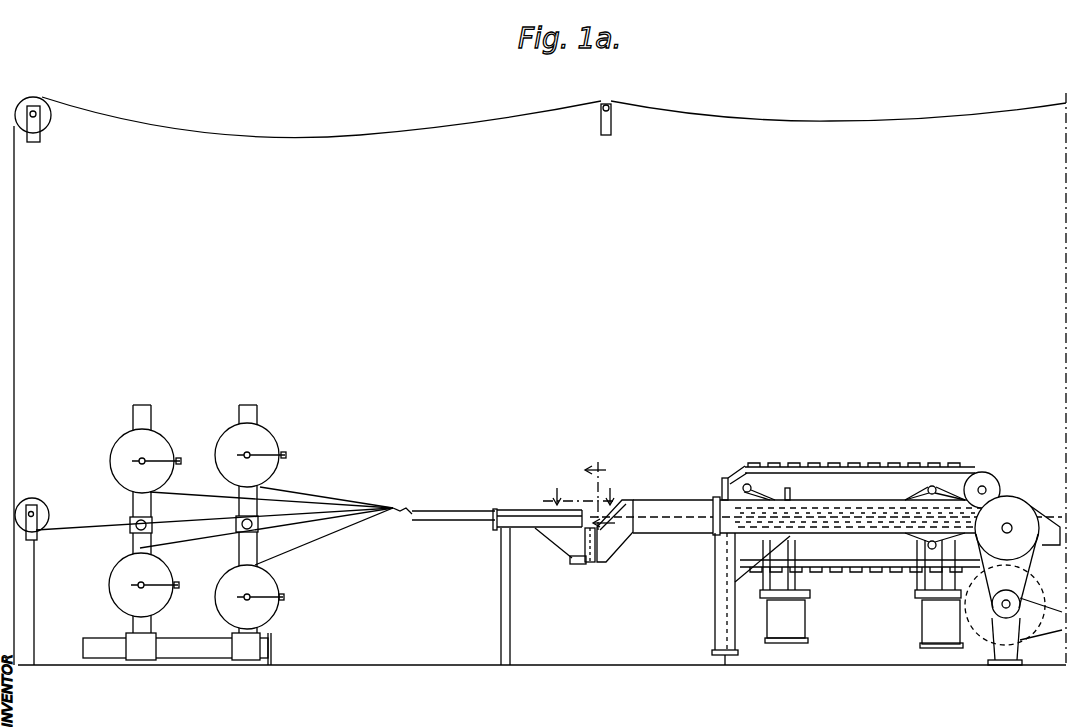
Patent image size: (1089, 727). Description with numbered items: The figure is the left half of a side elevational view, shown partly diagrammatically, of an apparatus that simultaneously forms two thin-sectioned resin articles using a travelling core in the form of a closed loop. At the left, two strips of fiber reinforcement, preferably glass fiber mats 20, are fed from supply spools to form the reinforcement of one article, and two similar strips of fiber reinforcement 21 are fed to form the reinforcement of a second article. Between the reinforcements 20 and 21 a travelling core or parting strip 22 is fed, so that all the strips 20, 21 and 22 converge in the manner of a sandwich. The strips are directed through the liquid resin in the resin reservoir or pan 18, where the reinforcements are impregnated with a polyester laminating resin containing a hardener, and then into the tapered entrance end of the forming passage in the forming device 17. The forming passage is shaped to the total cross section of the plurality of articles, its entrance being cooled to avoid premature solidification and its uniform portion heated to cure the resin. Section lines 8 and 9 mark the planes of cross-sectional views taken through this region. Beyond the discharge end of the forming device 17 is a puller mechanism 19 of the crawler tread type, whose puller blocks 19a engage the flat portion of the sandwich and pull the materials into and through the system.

The section line 8- 8 is at (584, 492).
The section line 9- 9 is at (603, 498).
The forming device 17 is at (505, 514).
The resin reservoir or pan 18 is at (451, 522).
The puller mechanism 19 is at (870, 450).
The puller blocks 19a is at (742, 466).
The glass fiber mats 20 is at (191, 490).
The strips of fiber reinforcement 21 is at (190, 545).
The travelling core or parting strip 22 is at (18, 284).